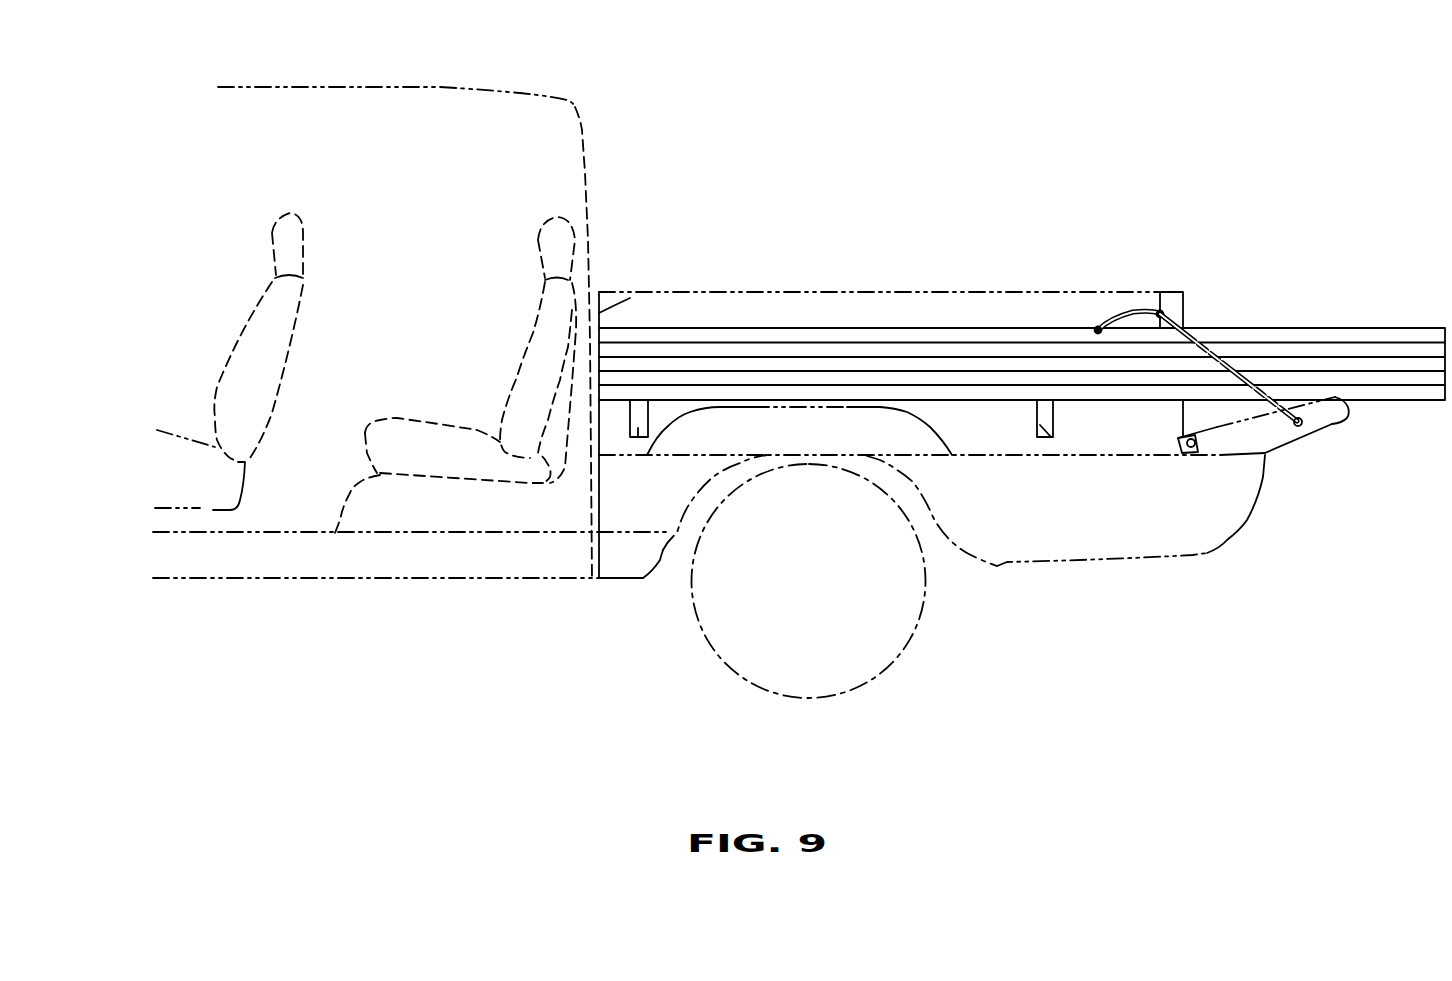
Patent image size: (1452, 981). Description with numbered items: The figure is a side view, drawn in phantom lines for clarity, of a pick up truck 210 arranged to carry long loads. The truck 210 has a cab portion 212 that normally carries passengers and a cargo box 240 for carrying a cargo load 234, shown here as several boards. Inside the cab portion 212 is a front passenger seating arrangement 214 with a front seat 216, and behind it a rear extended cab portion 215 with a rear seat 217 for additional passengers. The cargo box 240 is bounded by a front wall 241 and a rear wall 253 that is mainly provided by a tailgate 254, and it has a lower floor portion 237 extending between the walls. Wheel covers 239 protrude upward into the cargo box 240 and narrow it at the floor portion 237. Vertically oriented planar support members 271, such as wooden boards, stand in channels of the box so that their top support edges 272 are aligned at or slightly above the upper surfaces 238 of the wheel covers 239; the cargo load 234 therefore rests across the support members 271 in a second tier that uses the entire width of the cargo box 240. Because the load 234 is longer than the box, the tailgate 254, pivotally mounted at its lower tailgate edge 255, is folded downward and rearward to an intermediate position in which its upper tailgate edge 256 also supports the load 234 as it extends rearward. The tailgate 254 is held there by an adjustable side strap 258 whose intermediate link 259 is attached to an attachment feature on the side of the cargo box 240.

The pick up truck 210 is at (666, 120).
The cab portion 212 is at (582, 100).
The front passenger seating arrangement 214 is at (206, 512).
The rear extended cab portion 215 is at (480, 578).
The front seat 216 is at (295, 248).
The rear seat 217 is at (558, 250).
The cargo load 234 is at (1320, 327).
The lower floor portion 237 is at (982, 455).
The upper surface of wheel cover 238 is at (813, 407).
The wheel cover 239 is at (757, 396).
The cargo box 240 is at (1002, 278).
The front wall 241 is at (636, 292).
The rear wall 253 is at (1185, 305).
The tailgate 254 is at (1327, 418).
The lower tailgate edge 255 is at (1210, 453).
The upper tailgate edge 256 is at (1348, 405).
The adjustable side strap 258 is at (1238, 352).
The intermediate link 259 is at (1163, 290).
The support member 271 is at (638, 437).
The top support edge 272 is at (640, 400).